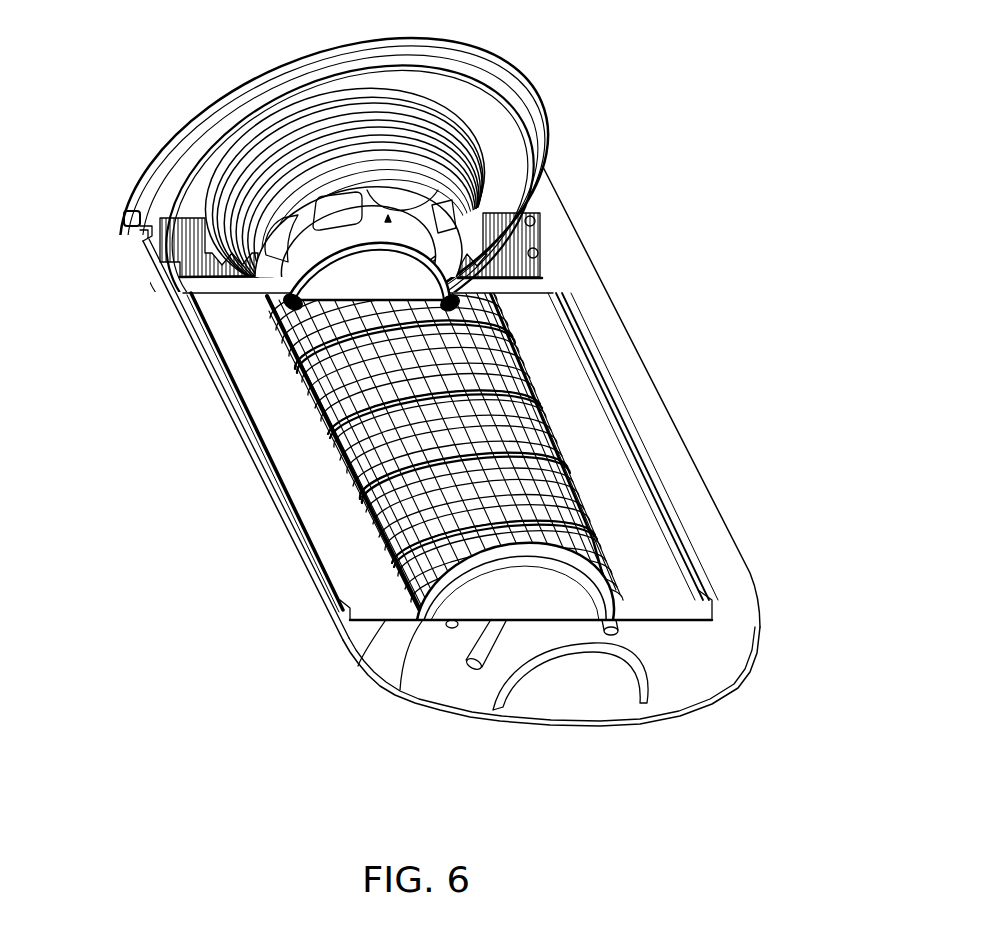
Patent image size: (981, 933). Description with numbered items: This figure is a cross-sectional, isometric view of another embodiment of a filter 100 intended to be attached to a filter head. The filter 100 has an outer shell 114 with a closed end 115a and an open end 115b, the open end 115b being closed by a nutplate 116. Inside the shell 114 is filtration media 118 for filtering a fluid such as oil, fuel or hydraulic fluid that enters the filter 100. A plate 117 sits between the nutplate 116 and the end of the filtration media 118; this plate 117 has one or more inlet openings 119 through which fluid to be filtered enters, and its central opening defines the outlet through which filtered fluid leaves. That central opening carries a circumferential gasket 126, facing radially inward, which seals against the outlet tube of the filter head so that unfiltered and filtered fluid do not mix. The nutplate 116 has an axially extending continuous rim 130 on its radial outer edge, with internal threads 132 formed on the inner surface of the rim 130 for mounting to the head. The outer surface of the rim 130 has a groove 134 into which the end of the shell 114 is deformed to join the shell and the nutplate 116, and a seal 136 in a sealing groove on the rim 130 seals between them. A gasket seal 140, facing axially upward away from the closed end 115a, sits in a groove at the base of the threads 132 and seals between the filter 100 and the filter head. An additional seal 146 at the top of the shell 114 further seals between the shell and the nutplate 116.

The filter 100 is at (408, 391).
The outer shell 114 is at (612, 348).
The closed end 115a is at (447, 712).
The open end 115b is at (145, 245).
The nutplate 116 is at (520, 245).
The plate 117 is at (268, 282).
The filtration media 118 is at (595, 450).
The inlet openings 119 is at (333, 205).
The circumferential gasket 126 is at (300, 305).
The rim 130 is at (547, 213).
The internal threads 132 is at (206, 201).
The groove 134 is at (167, 216).
The seal 136 is at (540, 258).
The gasket seal 140 is at (470, 188).
The additional seal 146 is at (540, 137).